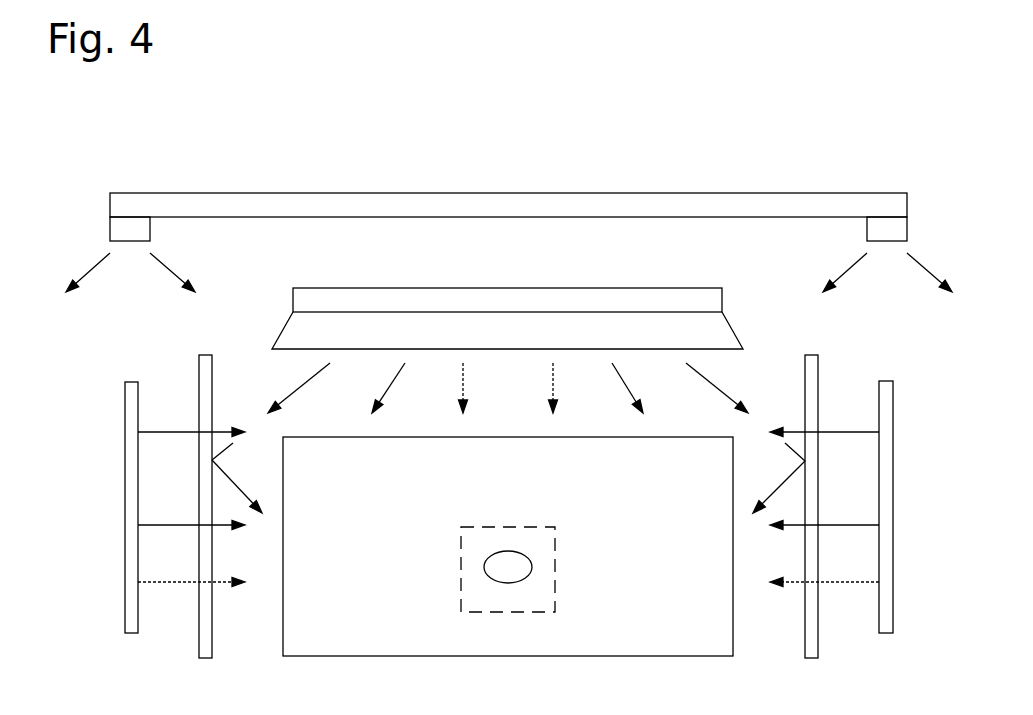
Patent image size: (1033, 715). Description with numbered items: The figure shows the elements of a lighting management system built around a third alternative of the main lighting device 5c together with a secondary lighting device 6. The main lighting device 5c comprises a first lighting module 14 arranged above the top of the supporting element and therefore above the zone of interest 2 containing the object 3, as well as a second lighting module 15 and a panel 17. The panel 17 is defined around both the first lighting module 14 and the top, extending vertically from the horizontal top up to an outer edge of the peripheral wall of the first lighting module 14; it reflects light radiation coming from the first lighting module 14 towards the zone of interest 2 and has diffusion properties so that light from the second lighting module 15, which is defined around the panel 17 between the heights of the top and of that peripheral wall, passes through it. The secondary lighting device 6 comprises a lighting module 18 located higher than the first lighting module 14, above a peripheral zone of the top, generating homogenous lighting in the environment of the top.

The zone of interest 2 is at (555, 570).
The object 3 is at (484, 568).
The main lighting device 5c is at (718, 300).
The secondary lighting device 6 is at (247, 199).
The first lighting module 14 is at (720, 349).
The second lighting module 15 is at (131, 488).
The panel 17 is at (205, 613).
The lighting module 18 is at (128, 231).